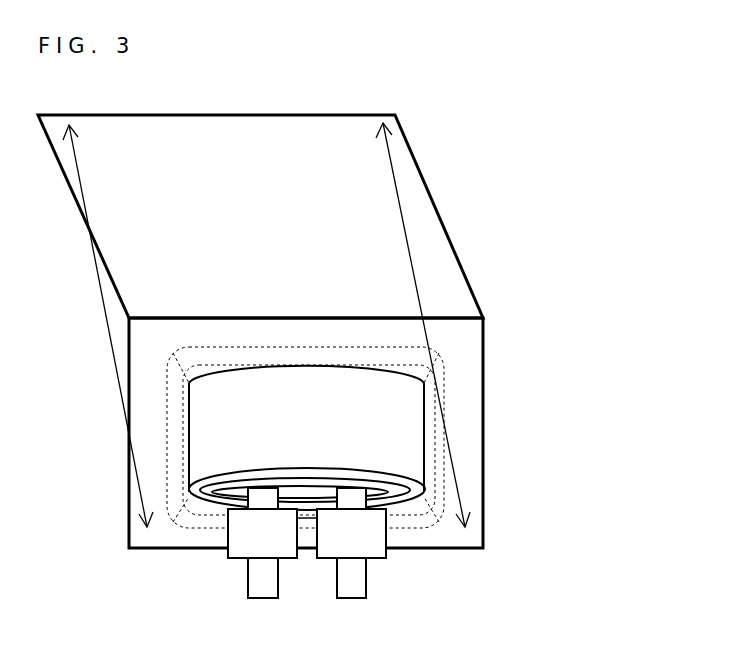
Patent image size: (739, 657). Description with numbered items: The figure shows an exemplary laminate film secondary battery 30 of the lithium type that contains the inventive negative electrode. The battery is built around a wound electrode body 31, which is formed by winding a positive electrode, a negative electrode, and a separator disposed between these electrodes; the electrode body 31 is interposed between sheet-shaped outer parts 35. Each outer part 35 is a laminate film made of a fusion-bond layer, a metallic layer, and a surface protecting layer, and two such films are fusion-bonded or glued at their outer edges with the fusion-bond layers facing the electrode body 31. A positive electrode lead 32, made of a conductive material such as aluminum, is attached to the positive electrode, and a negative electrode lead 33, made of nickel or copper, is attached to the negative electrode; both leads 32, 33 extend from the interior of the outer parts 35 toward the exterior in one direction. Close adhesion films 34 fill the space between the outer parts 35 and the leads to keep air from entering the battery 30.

The laminate film secondary battery 30 is at (435, 128).
The wound electrode body 31 is at (387, 420).
The positive electrode lead 32 is at (258, 585).
The negative electrode lead 33 is at (350, 585).
The close adhesion film 34 is at (373, 538).
The outer part 35 is at (322, 222).